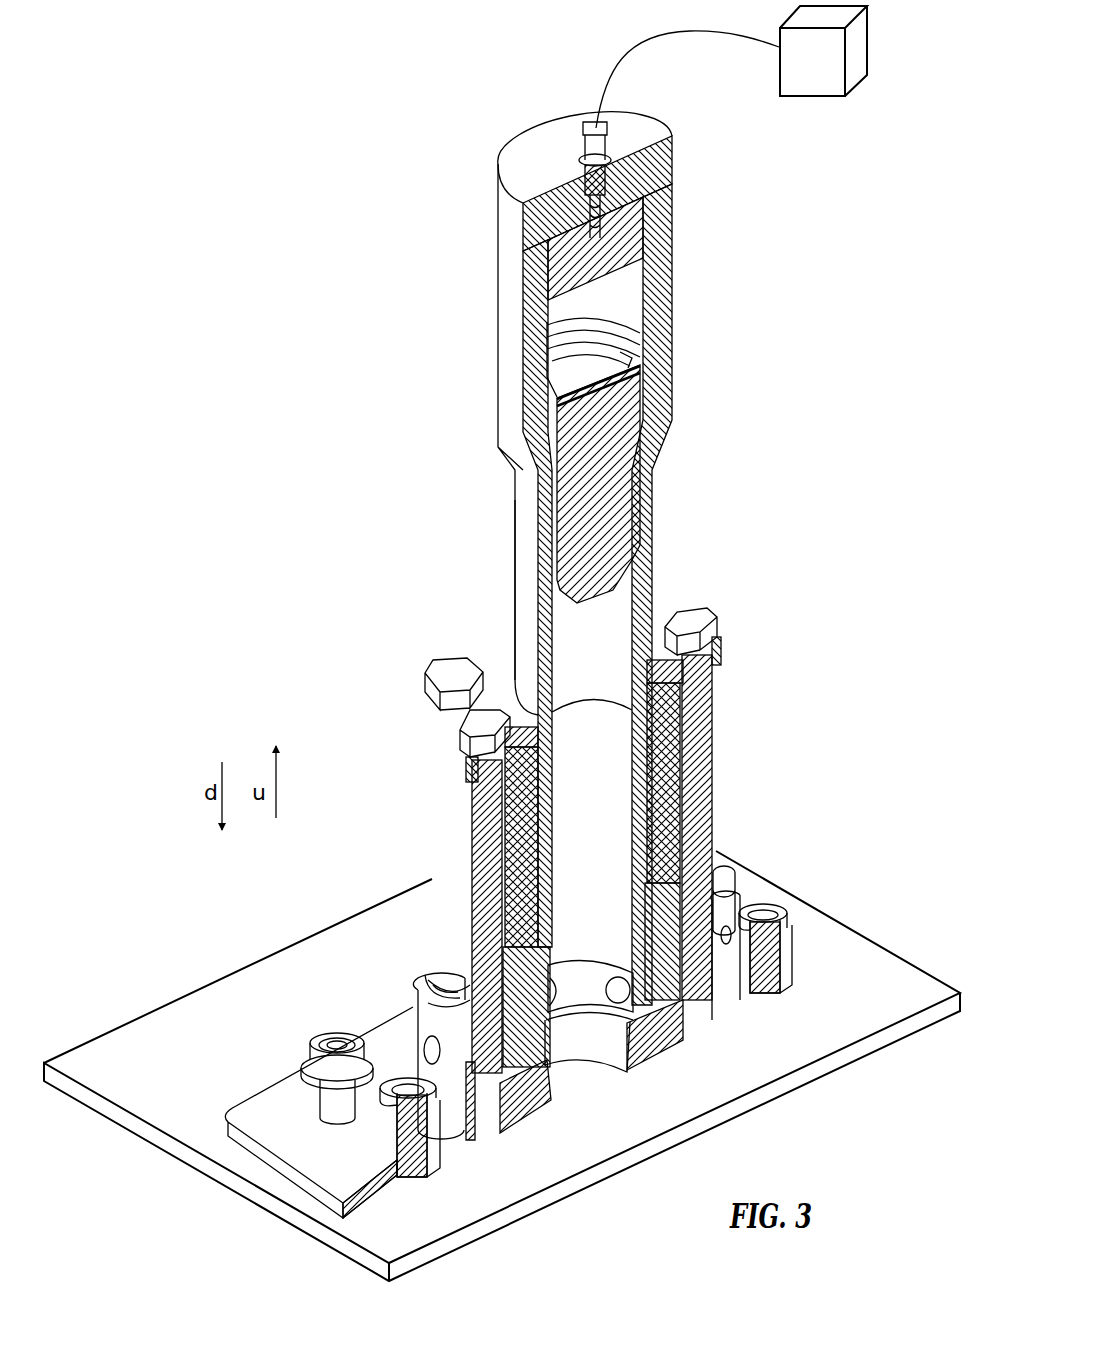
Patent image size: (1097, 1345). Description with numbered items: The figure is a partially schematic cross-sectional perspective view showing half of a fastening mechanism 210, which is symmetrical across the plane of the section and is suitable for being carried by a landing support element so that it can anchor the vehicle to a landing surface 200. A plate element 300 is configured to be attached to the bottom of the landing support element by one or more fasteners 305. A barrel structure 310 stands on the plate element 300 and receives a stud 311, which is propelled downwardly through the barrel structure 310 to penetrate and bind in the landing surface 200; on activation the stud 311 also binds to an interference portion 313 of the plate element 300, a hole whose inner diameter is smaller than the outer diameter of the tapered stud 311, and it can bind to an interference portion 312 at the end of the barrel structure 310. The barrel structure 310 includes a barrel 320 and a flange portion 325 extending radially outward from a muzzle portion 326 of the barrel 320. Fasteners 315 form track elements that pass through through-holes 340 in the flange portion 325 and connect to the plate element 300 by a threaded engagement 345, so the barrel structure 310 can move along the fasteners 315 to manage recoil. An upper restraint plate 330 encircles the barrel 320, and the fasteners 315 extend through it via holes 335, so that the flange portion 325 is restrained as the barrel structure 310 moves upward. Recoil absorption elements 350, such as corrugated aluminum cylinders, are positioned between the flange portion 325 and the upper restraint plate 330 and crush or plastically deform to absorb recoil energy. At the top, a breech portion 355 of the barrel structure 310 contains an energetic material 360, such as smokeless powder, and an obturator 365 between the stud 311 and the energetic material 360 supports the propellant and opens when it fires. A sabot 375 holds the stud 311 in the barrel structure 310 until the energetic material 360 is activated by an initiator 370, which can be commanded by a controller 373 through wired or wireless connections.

The landing surface 200 is at (130, 1045).
The fastening mechanism 210 is at (318, 323).
The plate element 300 is at (240, 1113).
The fasteners 305 is at (320, 1037).
The barrel structure 310 is at (493, 548).
The stud 311 is at (605, 438).
The interference portion 312 is at (587, 973).
The interference portion 313 is at (590, 1040).
The fasteners 315 is at (690, 625).
The barrel 320 is at (523, 638).
The flange portion 325 is at (437, 1017).
The muzzle portion 326 is at (640, 1010).
The upper restraint plate 330 is at (488, 660).
The holes 335 is at (718, 662).
The through-holes 340 is at (437, 992).
The threaded engagement 345 is at (500, 1107).
The recoil absorption elements 350 is at (667, 757).
The breech portion 355 is at (633, 290).
The energetic material 360 is at (652, 170).
The obturator 365 is at (620, 365).
The initiator 370 is at (596, 125).
The controller 373 is at (870, 55).
The sabot 375 is at (655, 462).